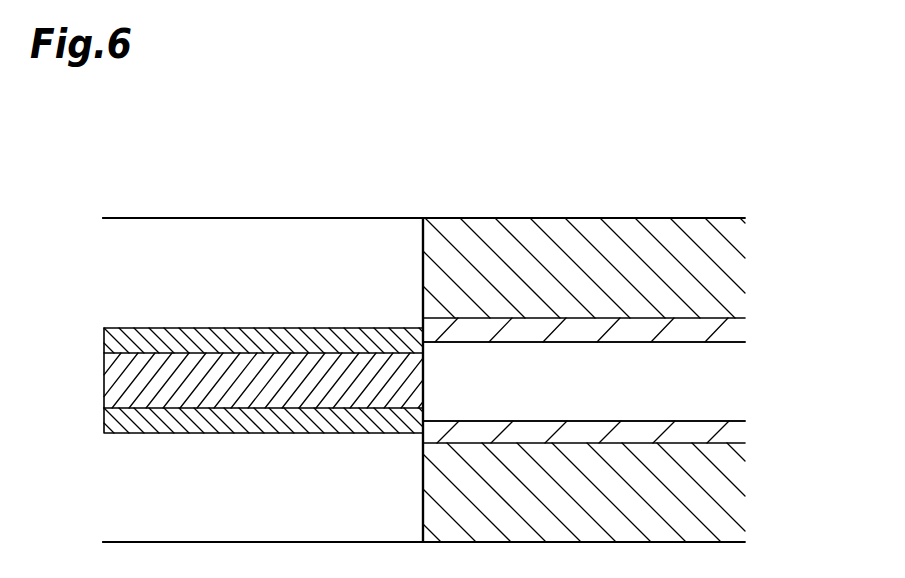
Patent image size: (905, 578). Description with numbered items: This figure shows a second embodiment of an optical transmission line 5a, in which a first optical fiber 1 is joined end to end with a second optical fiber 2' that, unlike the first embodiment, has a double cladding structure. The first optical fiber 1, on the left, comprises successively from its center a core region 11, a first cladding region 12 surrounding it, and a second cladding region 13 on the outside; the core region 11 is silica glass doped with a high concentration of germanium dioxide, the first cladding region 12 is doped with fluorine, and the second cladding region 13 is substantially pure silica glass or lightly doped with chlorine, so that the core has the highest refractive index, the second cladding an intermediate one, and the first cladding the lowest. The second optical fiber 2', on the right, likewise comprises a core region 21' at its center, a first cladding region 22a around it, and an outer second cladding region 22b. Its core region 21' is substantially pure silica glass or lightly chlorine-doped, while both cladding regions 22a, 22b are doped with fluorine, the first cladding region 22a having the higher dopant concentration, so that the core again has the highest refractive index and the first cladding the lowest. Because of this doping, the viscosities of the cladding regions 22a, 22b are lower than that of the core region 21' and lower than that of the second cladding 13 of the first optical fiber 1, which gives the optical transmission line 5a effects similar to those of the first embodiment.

The optical fiber 1 is at (231, 218).
The second optical fiber 2' is at (584, 334).
The optical transmission line 5a is at (717, 166).
The core region 11 is at (140, 388).
The first cladding region 12 is at (140, 343).
The second cladding region 13 is at (138, 272).
The core region 21' is at (625, 381).
The first cladding region 22a is at (727, 332).
The second cladding region 22b is at (728, 260).